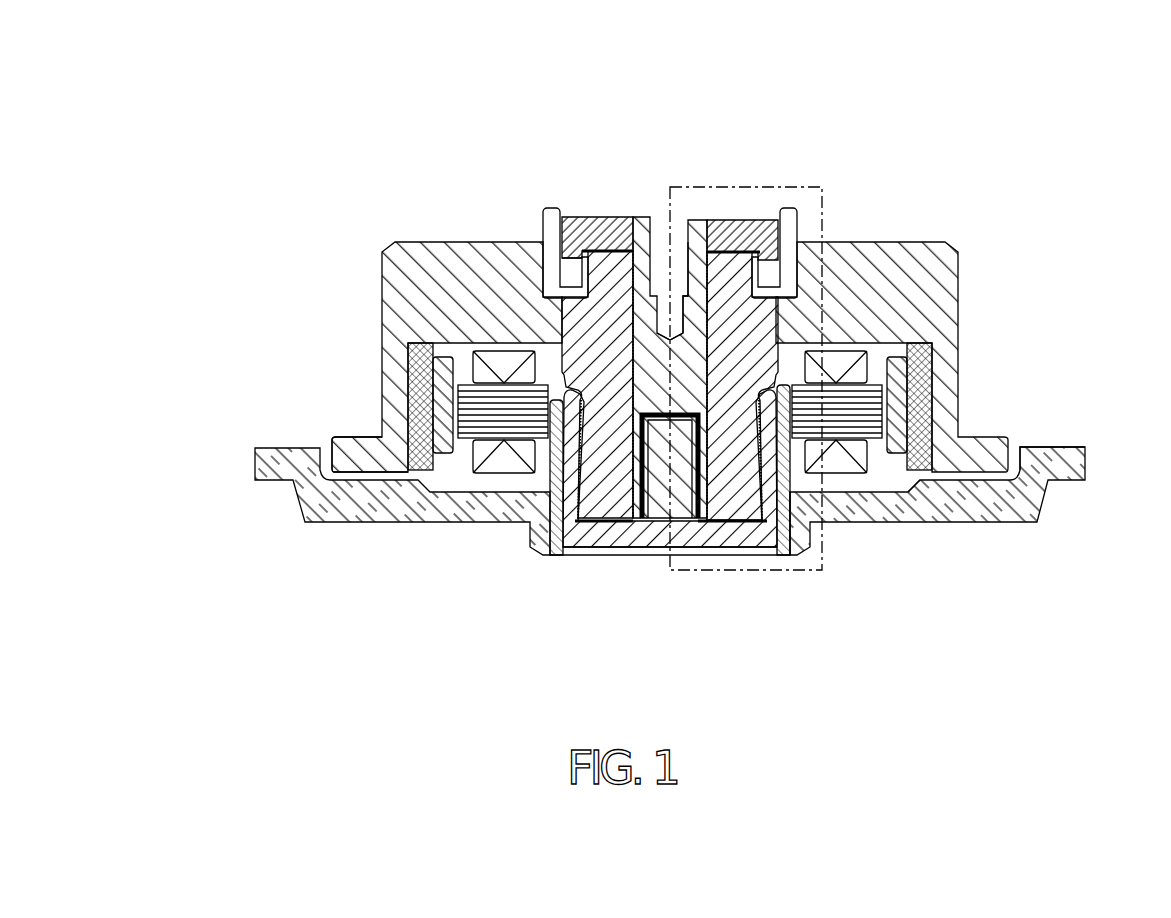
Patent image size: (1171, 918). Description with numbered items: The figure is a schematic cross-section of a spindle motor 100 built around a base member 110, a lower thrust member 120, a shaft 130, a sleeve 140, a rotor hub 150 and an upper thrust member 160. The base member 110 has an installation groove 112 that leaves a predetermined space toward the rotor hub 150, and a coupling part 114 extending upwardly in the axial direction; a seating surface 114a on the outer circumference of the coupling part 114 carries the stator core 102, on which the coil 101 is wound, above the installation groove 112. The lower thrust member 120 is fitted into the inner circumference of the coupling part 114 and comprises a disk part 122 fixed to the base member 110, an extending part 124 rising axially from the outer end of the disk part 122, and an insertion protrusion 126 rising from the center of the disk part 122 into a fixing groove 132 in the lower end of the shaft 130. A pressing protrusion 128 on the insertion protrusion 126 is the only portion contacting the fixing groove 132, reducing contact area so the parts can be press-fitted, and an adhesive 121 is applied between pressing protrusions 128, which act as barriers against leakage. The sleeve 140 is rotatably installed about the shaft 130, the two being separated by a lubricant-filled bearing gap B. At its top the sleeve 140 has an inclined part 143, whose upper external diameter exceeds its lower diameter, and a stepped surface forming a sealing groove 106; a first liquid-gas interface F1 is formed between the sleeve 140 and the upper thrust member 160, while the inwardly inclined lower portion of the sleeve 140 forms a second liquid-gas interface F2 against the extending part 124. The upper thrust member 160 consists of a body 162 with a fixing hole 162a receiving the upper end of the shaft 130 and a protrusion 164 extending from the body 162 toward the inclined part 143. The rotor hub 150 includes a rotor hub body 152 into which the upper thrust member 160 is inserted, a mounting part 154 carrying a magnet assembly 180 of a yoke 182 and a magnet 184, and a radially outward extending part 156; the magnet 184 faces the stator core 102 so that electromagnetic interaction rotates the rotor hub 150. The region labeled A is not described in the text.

The spindle motor 100 is at (398, 49).
The coil 101 is at (507, 463).
The stator core 102 is at (483, 425).
The sealing groove 106 is at (577, 292).
The base member 110 is at (945, 513).
The installation groove 112 is at (1010, 530).
The coupling part 114 is at (785, 520).
The seating surface 114a is at (845, 445).
The lower thrust member 120 is at (633, 470).
The adhesive 121 is at (683, 480).
The disk part 122 is at (600, 547).
The extending part 124 is at (555, 552).
The insertion protrusion 126 is at (662, 495).
The pressing protrusion 128 is at (690, 490).
The shaft 130 is at (663, 320).
The fixing groove 132 is at (660, 470).
The sleeve 140 is at (600, 225).
The inclined part 143 is at (552, 213).
The rotor hub 150 is at (603, 357).
The rotor hub body 152 is at (405, 285).
The mounting part 154 is at (415, 378).
The extending part 156 is at (336, 434).
The upper thrust member 160 is at (747, 183).
The body 162 is at (738, 232).
The fixing hole 162a is at (694, 330).
The protrusion 164 is at (768, 255).
The magnet assembly 180 is at (1004, 406).
The yoke 182 is at (932, 405).
The magnet 184 is at (900, 382).
The region A is at (822, 218).
The bearing gap B is at (605, 300).
The first liquid-gas interface F1 is at (567, 262).
The second liquid-gas interface F2 is at (798, 545).